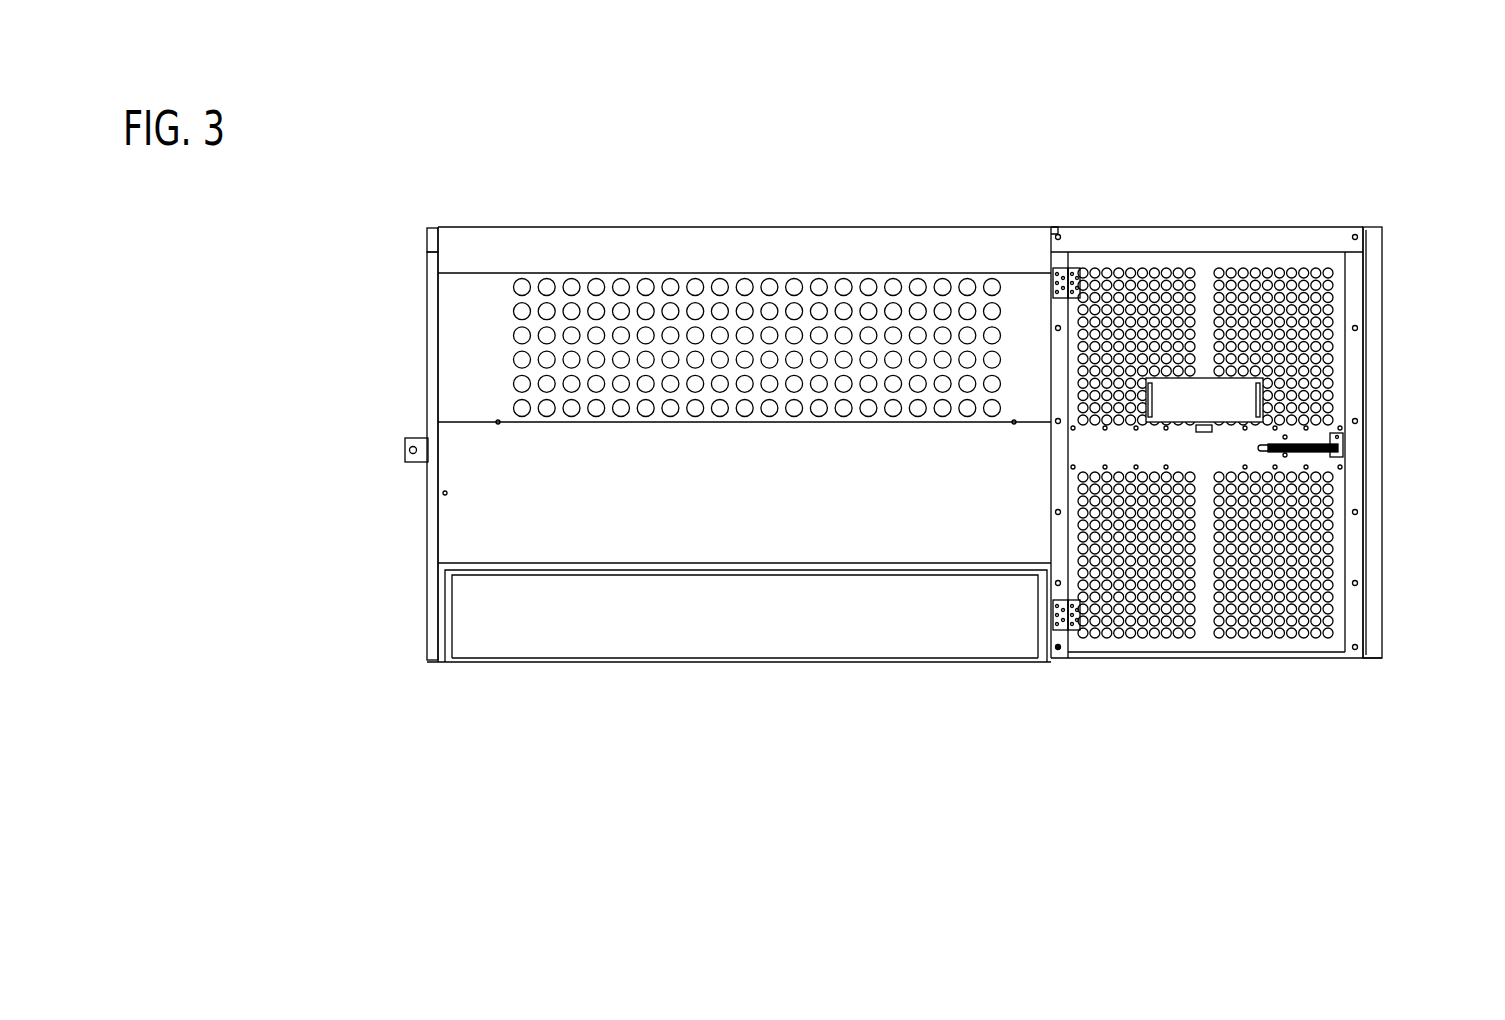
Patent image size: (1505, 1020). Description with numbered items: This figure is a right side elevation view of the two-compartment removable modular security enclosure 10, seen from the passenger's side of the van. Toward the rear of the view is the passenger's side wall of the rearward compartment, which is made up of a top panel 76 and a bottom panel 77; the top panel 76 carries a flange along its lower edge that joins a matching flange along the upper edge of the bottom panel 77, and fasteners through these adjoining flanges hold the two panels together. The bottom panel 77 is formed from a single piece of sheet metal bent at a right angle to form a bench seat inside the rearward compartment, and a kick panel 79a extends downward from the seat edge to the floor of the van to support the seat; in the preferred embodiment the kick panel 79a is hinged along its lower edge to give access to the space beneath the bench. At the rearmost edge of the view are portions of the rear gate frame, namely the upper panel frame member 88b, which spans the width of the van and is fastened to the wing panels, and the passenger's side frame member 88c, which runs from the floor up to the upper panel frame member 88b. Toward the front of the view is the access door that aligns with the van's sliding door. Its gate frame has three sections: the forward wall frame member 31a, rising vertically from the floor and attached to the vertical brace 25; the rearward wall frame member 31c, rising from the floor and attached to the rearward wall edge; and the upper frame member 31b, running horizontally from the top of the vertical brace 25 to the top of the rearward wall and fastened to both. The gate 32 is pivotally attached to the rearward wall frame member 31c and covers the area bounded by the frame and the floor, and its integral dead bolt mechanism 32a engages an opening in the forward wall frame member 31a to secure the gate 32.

The removable modular security enclosure 10 is at (895, 524).
The vertical brace 25 is at (1378, 373).
The forward wall frame member 31a is at (1355, 617).
The upper frame member 31b is at (1198, 236).
The rearward wall frame member 31c is at (1059, 636).
The gate 32 is at (1203, 627).
The dead bolt mechanism 32a is at (1320, 453).
The top panel 76 is at (653, 246).
The bottom panel 77 is at (510, 522).
The kick panel 79a is at (583, 630).
The upper panel frame member 88b is at (430, 240).
The passenger's side frame member 88c is at (427, 478).